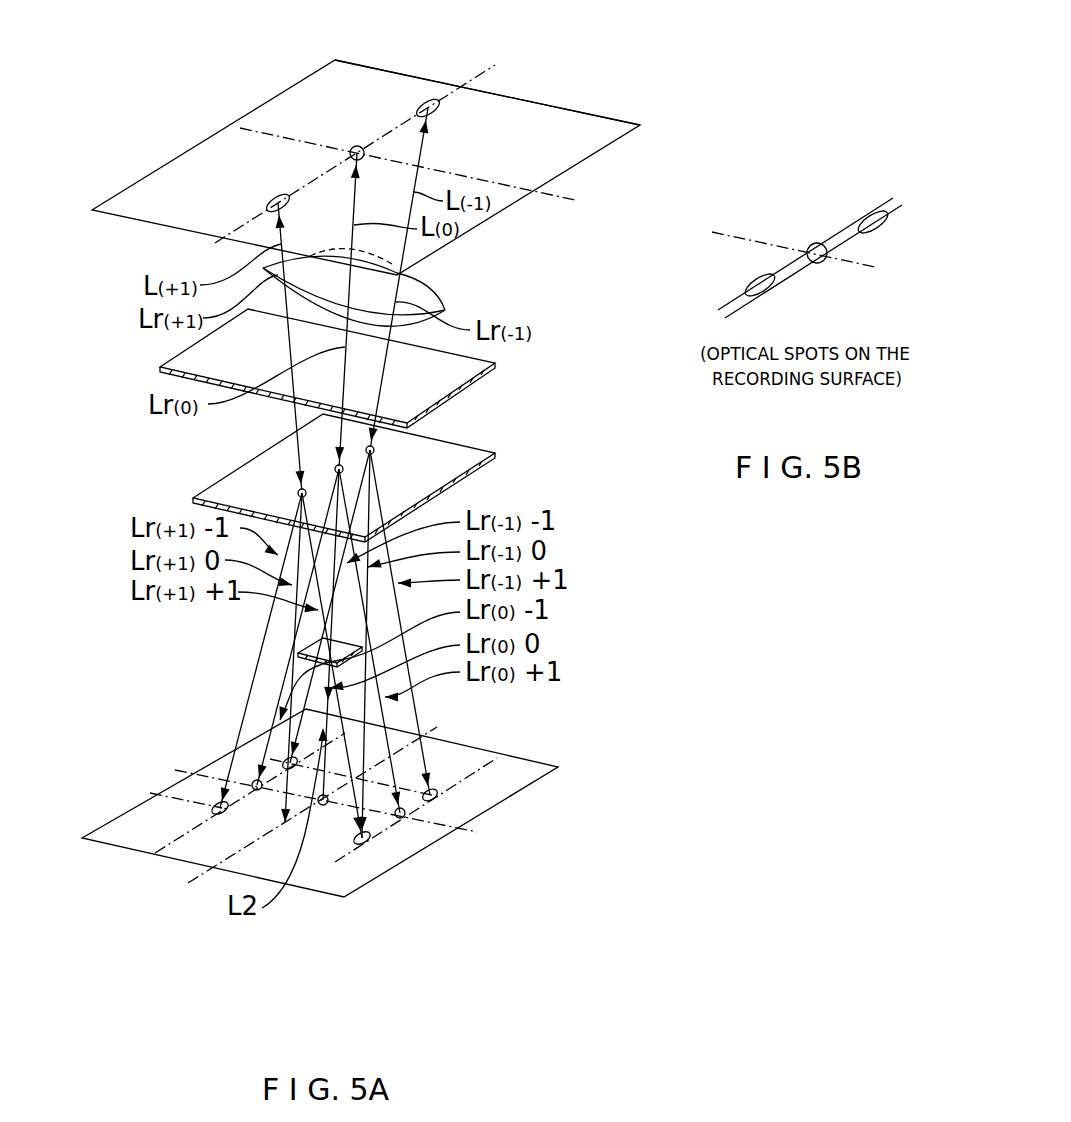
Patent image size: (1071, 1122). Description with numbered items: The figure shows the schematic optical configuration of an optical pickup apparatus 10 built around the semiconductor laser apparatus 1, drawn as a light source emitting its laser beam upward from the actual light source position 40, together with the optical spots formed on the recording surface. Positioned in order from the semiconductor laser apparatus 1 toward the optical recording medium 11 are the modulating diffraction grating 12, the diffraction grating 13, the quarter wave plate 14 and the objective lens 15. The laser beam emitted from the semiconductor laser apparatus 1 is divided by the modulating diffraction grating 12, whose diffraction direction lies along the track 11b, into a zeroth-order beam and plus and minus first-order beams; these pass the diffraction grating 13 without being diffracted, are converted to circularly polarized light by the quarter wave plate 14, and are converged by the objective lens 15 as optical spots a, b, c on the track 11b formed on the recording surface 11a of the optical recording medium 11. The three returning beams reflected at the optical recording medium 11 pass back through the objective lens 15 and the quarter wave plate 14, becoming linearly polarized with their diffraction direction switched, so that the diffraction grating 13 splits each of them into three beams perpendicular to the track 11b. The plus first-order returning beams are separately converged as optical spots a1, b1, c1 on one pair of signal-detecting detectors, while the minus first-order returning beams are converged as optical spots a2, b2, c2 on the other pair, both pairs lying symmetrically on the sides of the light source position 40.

In FIG. 5A, the semiconductor laser apparatus 1 is at (548, 742).
In FIG. 5A, the optical pickup apparatus 10 is at (108, 330).
In FIG. 5A, the optical recording medium 11 is at (578, 103).
In FIG. 5A, the recording surface 11a is at (625, 118).
In FIG. 5A, the track 11b is at (473, 82).
In FIG. 5B, the track 11b is at (797, 272).
In FIG. 5A, the modulating diffraction grating 12 is at (300, 654).
In FIG. 5A, the diffraction grating 13 is at (465, 452).
In FIG. 5A, the 1/4 wave plate 14 is at (462, 373).
In FIG. 5A, the objective lens 15 is at (432, 294).
In FIG. 5A, the actual light source position 40 is at (323, 805).
In FIG. 5A, the optical spot a is at (350, 151).
In FIG. 5B, the optical spot a is at (810, 247).
In FIG. 5A, the optical spot b is at (418, 106).
In FIG. 5B, the optical spot b is at (886, 227).
In FIG. 5A, the optical spot c is at (268, 202).
In FIG. 5B, the optical spot c is at (752, 290).
In FIG. 5A, the optical spot a1 is at (406, 813).
In FIG. 5A, the optical spot b1 is at (367, 840).
In FIG. 5A, the optical spot c1 is at (440, 795).
In FIG. 5A, the optical spot a2 is at (251, 786).
In FIG. 5A, the optical spot b2 is at (213, 808).
In FIG. 5A, the optical spot c2 is at (283, 760).